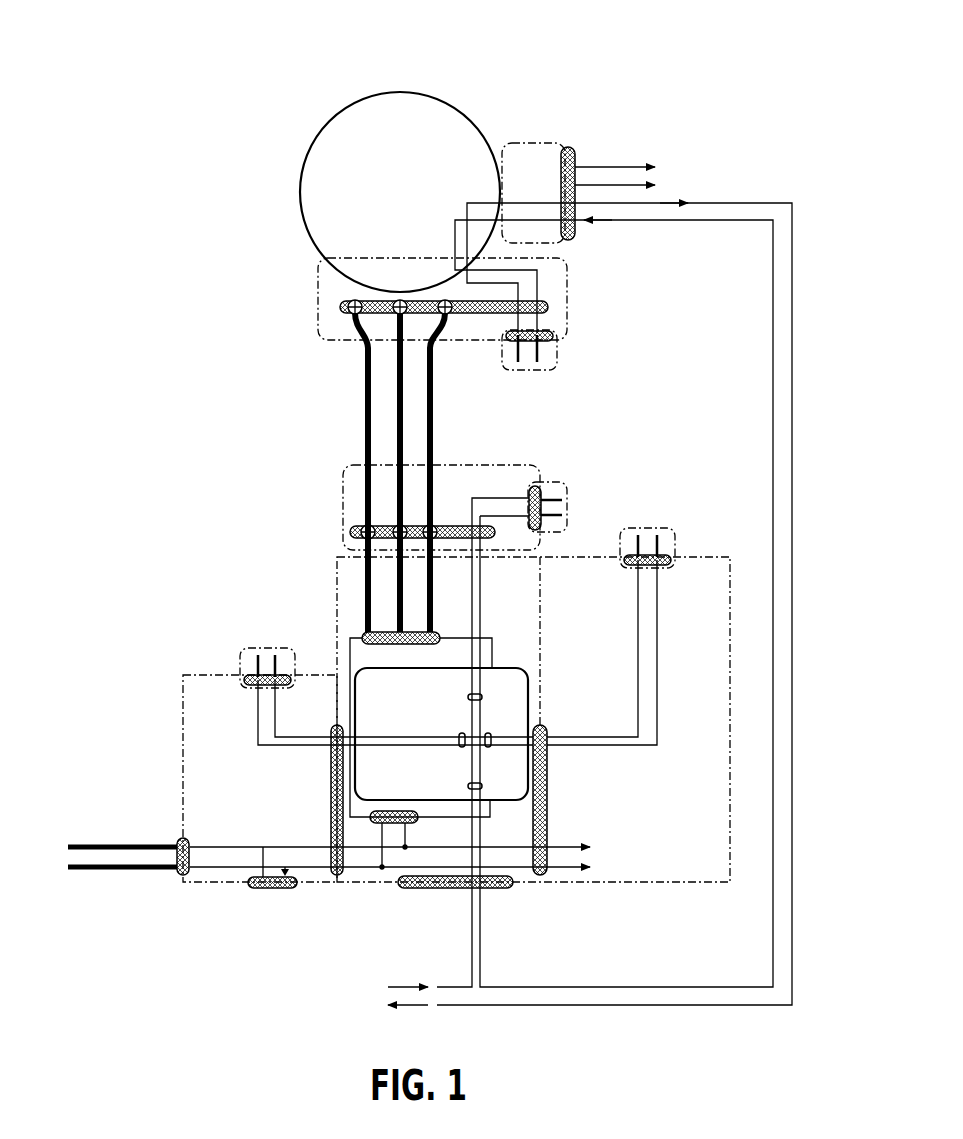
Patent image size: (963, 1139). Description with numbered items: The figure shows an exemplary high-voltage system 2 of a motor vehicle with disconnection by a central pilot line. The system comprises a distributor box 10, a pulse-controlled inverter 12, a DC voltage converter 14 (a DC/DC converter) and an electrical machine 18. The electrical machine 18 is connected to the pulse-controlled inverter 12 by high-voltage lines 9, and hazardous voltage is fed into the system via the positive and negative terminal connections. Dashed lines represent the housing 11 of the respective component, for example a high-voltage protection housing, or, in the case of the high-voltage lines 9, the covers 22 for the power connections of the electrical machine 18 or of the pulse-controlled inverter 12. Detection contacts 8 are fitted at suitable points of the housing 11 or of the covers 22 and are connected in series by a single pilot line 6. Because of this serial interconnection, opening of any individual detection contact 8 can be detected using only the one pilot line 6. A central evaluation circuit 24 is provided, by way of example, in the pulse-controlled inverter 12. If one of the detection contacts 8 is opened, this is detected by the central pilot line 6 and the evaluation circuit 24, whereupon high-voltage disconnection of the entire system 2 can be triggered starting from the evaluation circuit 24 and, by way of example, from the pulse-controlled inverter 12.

The high-voltage system 2 is at (258, 116).
The pilot line 6 is at (792, 975).
The detection contact 8 is at (525, 372).
The high-voltage line 9 is at (430, 418).
The distributor box 10 is at (183, 710).
The housing 11 is at (337, 565).
The pulse-controlled inverter 12 is at (523, 601).
The DC voltage converter 14 is at (711, 868).
The electrical machine 18 is at (310, 185).
The cover 22 is at (318, 300).
The evaluation circuit 24 is at (410, 713).